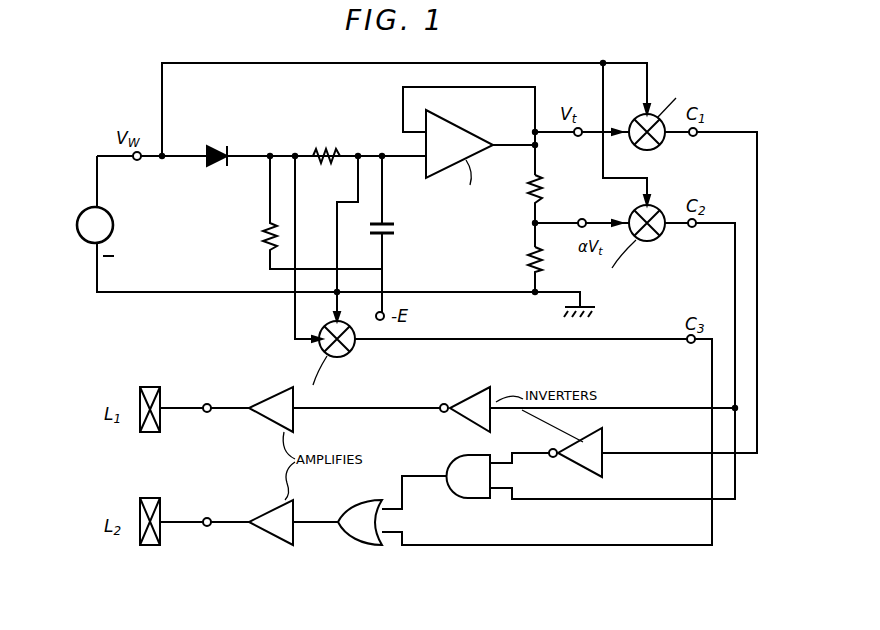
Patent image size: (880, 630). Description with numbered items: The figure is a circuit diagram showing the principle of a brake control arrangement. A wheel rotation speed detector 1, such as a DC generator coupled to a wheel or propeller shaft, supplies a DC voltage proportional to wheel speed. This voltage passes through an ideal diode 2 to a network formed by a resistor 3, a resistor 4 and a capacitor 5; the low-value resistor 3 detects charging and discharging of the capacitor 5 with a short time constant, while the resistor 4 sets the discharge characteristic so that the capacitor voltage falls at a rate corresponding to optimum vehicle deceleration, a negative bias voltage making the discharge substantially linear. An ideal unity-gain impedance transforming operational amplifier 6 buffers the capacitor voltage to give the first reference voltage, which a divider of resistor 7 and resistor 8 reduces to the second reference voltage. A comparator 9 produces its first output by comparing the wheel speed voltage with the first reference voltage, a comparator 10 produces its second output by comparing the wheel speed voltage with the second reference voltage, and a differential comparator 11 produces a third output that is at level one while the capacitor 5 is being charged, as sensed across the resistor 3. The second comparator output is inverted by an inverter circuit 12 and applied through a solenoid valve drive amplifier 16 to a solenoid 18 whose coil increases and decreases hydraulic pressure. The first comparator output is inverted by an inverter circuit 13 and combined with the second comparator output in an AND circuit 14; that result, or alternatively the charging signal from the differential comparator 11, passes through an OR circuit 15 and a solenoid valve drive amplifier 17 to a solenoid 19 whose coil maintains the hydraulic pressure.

The wheel rotation speed detector 1 is at (113, 227).
The diode 2 is at (214, 146).
The resistor 3 is at (337, 149).
The resistor 4 is at (266, 229).
The capacitor 5 is at (396, 230).
The operational amplifier 6 is at (468, 131).
The resistor 7 is at (544, 180).
The resistor 8 is at (544, 264).
The comparator 9 is at (657, 146).
The comparator 10 is at (659, 238).
The differential comparator 11 is at (349, 352).
The inverter circuit 12 is at (472, 390).
The inverter circuit 13 is at (604, 434).
The AND circuit 14 is at (456, 456).
The OR circuit 15 is at (368, 482).
The solenoid valve drive amplifier 16 is at (283, 391).
The solenoid valve drive amplifier 17 is at (284, 501).
The solenoid 18 is at (166, 389).
The solenoid 19 is at (166, 501).